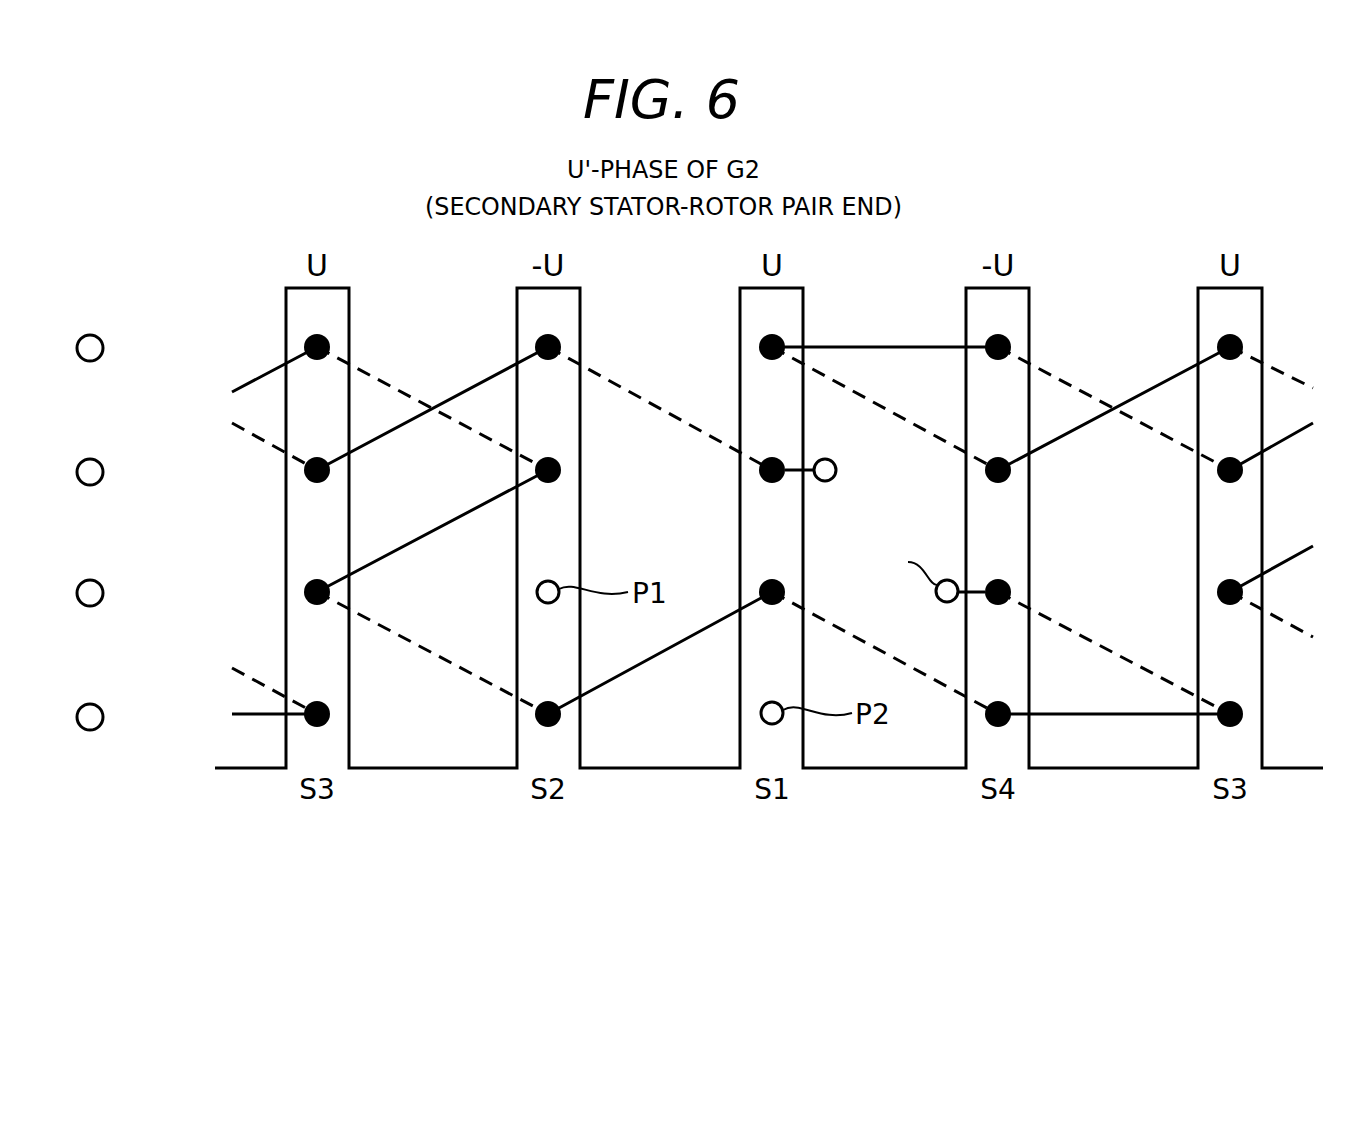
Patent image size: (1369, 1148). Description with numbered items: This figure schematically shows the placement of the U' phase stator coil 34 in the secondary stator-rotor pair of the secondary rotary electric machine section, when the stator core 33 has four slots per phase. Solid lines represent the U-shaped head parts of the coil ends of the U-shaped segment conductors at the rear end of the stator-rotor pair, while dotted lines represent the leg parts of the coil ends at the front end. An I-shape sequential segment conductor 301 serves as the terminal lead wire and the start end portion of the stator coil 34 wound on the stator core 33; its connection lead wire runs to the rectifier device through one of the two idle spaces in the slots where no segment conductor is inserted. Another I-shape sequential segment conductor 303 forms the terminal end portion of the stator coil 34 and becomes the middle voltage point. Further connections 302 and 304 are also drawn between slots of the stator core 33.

The stator core 33 is at (663, 747).
The stator coil 34 is at (1103, 813).
The I-shape sequential segment conductor 301 is at (766, 481).
The middle voltage point connection 302 is at (1006, 584).
The I-shape sequential segment conductor 303 is at (867, 347).
The coil end jumper connection 304 is at (1125, 714).